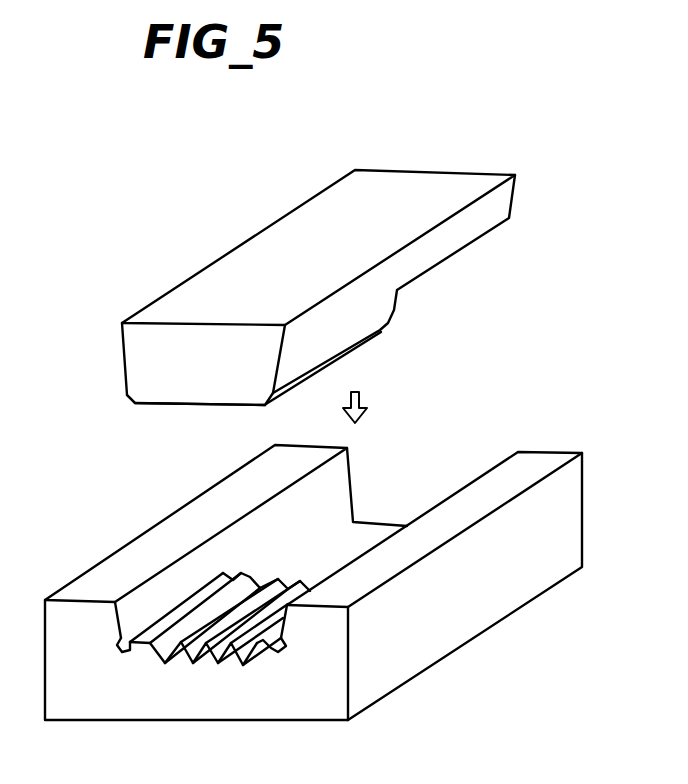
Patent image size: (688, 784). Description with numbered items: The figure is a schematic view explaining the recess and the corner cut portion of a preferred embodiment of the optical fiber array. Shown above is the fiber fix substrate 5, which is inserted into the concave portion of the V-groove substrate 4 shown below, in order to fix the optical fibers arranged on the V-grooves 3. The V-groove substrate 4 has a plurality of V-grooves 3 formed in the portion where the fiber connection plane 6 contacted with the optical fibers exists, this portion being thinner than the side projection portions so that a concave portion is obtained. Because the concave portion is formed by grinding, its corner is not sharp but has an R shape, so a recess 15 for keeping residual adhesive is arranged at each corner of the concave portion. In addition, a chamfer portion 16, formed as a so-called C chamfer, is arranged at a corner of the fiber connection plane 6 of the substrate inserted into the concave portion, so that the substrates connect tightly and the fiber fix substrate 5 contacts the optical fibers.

The fiber fix substrate 5 is at (283, 236).
The V-groove substrate 4 is at (462, 618).
The chamfer portion 16 is at (127, 398).
The fiber connection plane 6 is at (192, 403).
The recess 15 is at (118, 643).
The V-grooves 3 is at (207, 645).